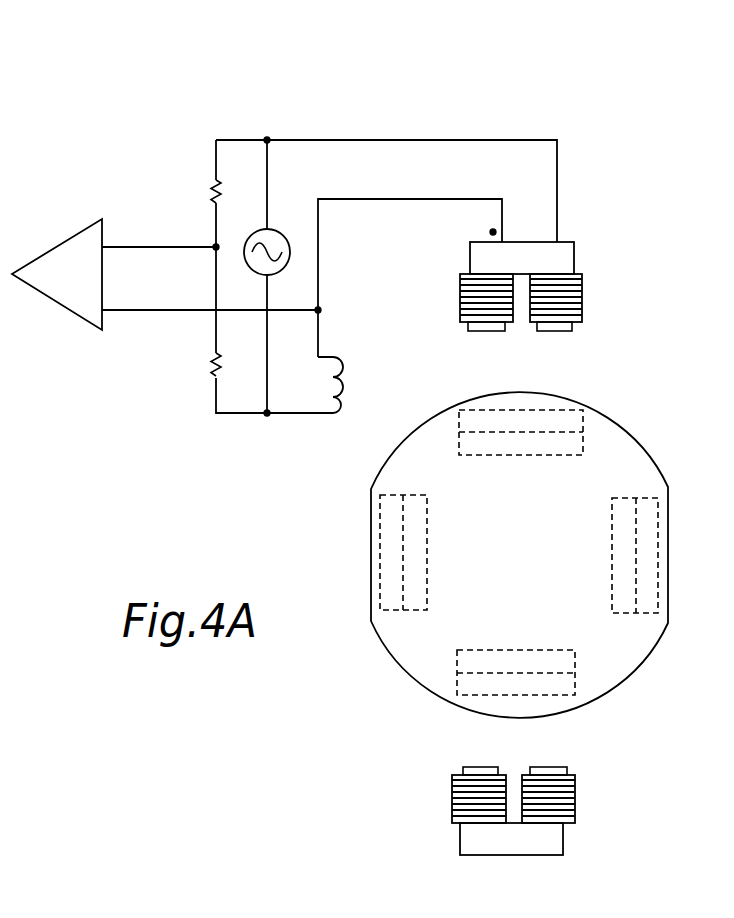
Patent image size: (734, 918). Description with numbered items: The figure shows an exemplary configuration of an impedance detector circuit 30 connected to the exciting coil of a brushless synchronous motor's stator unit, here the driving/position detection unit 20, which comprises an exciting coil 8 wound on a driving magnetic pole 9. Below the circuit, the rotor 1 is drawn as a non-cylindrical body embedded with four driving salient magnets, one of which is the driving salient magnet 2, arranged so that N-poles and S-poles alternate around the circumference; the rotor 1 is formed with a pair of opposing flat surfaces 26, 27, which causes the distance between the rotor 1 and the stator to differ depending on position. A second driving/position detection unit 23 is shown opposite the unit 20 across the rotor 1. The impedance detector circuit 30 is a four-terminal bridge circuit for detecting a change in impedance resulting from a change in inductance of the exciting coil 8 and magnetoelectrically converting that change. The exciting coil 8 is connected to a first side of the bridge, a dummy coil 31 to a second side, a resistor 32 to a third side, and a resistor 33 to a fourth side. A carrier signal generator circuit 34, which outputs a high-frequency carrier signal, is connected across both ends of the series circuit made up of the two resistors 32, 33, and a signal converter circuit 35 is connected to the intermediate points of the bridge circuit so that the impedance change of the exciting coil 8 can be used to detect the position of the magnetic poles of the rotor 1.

The impedance detector circuit 30 is at (288, 108).
The resistor 33 is at (210, 191).
The resistor 32 is at (210, 369).
The carrier signal generator circuit 34 is at (283, 236).
The signal converter circuit 35 is at (55, 248).
The dummy coil 31 is at (343, 383).
The driving/position detection unit 20 is at (590, 267).
The driving magnetic pole 9 is at (563, 248).
The exciting coil 8 is at (577, 302).
The rotor 1 is at (425, 652).
The driving salient magnet 2 is at (583, 440).
The flat surface 27 is at (371, 543).
The flat surface 26 is at (668, 572).
The driving/position detection unit 23 is at (470, 837).